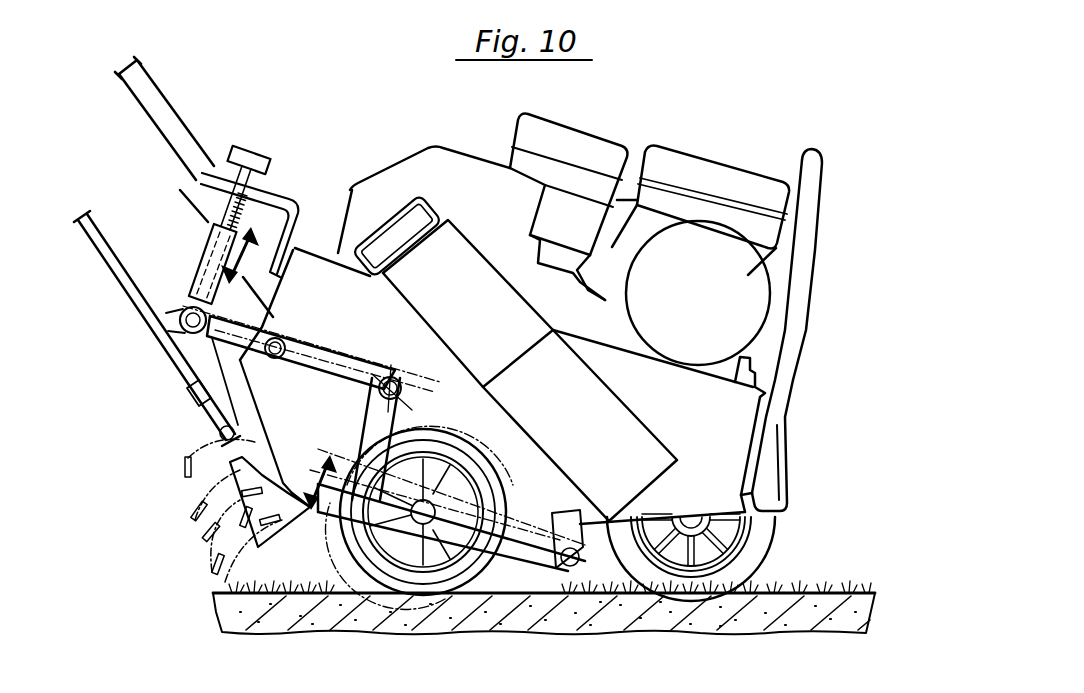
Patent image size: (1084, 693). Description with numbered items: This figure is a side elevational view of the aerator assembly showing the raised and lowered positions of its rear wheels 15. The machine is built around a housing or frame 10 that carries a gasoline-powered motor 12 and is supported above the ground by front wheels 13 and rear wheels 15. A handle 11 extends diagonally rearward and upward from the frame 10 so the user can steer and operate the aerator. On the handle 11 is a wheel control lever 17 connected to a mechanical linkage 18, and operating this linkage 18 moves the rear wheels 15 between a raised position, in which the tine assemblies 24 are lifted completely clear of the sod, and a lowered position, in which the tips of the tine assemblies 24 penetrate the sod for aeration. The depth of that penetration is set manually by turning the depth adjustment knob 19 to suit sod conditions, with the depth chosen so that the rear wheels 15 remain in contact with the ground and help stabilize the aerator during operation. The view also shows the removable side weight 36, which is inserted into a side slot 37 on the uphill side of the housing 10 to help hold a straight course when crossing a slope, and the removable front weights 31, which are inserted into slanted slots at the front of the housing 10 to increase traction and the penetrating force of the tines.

The housing 10 is at (349, 322).
The handle 11 is at (157, 103).
The motor 12 is at (693, 172).
The front wheels 13 is at (767, 533).
The rear wheels 15 is at (430, 590).
The wheel control lever 17 is at (135, 303).
The mechanical linkage 18 is at (370, 421).
The depth adjustment knob 19 is at (253, 163).
The tine assemblies 24 is at (267, 537).
The removable front weights 31 is at (793, 457).
The removable side weights 36 is at (466, 299).
The side slot 37 is at (585, 421).